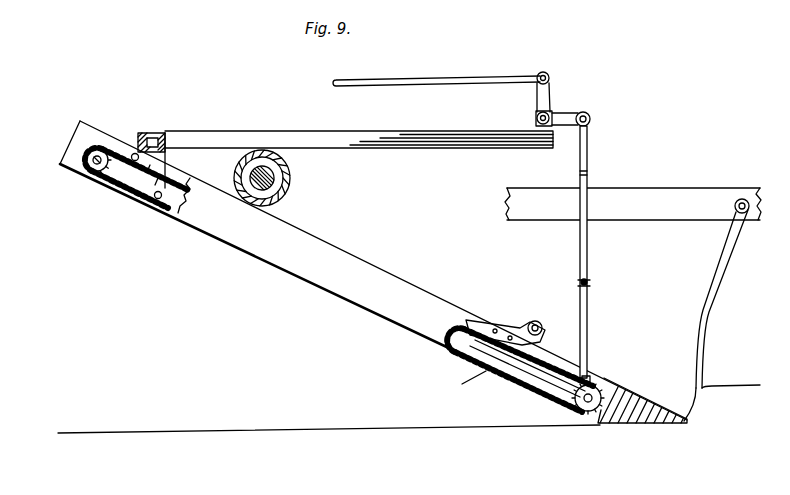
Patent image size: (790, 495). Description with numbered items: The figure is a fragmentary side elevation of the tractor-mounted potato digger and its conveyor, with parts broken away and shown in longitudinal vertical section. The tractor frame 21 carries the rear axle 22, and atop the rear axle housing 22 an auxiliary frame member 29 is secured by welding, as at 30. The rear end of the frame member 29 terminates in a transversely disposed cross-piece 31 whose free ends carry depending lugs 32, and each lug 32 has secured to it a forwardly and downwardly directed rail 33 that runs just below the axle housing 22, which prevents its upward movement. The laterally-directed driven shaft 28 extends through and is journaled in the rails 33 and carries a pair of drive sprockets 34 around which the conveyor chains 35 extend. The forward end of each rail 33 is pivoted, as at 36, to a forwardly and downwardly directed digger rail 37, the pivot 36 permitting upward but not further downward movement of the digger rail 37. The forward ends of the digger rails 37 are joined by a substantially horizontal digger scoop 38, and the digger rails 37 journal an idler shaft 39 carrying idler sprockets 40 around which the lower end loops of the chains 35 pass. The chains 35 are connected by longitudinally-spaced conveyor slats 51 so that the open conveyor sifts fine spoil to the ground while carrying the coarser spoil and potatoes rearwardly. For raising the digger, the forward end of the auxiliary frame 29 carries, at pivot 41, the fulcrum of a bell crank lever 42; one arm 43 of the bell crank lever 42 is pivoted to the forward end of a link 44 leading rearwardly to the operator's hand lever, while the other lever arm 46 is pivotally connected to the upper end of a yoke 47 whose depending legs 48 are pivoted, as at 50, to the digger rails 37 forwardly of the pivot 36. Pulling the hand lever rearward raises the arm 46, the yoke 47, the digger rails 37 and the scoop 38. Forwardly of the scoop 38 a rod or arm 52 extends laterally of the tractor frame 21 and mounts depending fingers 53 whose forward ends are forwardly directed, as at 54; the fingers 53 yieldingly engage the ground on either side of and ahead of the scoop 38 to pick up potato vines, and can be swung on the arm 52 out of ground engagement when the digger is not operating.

The frame 21 is at (507, 202).
The rear axle 22 is at (290, 192).
The driven shaft 28 is at (100, 156).
The auxiliary frame member 29 is at (235, 133).
The weld 30 is at (284, 152).
The cross-piece 31 is at (157, 133).
The depending lug 32 is at (167, 158).
The rail 33 is at (343, 253).
The drive sprocket 34 is at (85, 153).
The conveyor chain 35 is at (105, 184).
The pivot 36 is at (531, 320).
The digger rail 37 is at (552, 341).
The digger scoop 38 is at (640, 427).
The idler shaft 39 is at (593, 392).
The idler sprocket 40 is at (573, 399).
The pivot 41 is at (535, 118).
The bell crank lever 42 is at (552, 98).
The arm 43 is at (551, 83).
The link 44 is at (447, 76).
The lever arm 46 is at (576, 113).
The yoke 47 is at (589, 152).
The depending leg 48 is at (591, 298).
The pivot 50 is at (585, 380).
The conveyor slat 51 is at (478, 364).
The rod or arm 52 is at (737, 197).
The depending finger 53 is at (715, 308).
The forwardly-directed end 54 is at (705, 388).